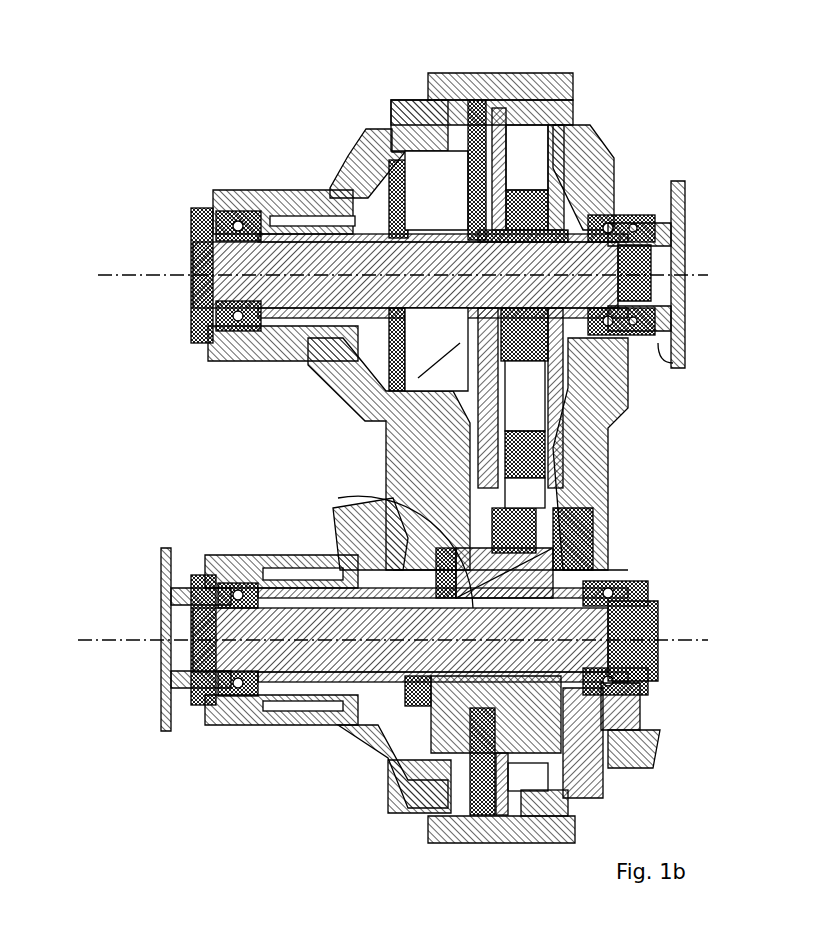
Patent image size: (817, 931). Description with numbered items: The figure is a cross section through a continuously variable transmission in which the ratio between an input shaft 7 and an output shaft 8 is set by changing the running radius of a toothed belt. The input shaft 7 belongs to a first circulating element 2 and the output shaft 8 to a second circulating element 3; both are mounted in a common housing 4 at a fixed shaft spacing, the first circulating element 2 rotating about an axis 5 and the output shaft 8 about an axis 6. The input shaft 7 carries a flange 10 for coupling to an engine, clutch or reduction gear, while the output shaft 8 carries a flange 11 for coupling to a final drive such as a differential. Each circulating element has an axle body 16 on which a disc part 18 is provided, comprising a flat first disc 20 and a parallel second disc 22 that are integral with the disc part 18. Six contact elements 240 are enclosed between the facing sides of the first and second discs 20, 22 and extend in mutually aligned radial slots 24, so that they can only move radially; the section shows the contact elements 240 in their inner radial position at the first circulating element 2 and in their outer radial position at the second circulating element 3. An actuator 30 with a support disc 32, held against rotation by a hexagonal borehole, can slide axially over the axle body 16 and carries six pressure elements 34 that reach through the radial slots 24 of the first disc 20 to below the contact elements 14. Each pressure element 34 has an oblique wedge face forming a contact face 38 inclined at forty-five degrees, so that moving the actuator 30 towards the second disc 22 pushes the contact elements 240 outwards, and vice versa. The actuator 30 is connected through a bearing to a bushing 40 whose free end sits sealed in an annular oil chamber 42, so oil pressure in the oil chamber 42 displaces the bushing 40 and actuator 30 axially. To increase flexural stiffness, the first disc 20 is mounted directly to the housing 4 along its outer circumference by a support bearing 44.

The first circulating element 2 is at (568, 167).
The second circulating element 3 is at (352, 745).
The housing 4 is at (366, 396).
The axis 5 is at (712, 265).
The axis 6 is at (676, 636).
The input shaft 7 is at (686, 182).
The output shaft 8 is at (145, 522).
The flange 10 is at (662, 345).
The flange 11 is at (162, 722).
The contact elements 14 is at (520, 364).
The axle body 16 is at (308, 292).
The disc part 18 is at (568, 226).
The first disc 20 is at (466, 112).
The second disc 22 is at (568, 150).
The radial slots 24 is at (600, 560).
The actuator 30 is at (370, 178).
The support disc 32 is at (440, 195).
The pressure elements 34 is at (432, 840).
The contact face 38 is at (566, 522).
The bushing 40 is at (326, 318).
The annular oil chamber 42 is at (252, 222).
The support bearing 44 is at (483, 95).
The contact elements 240 is at (516, 160).